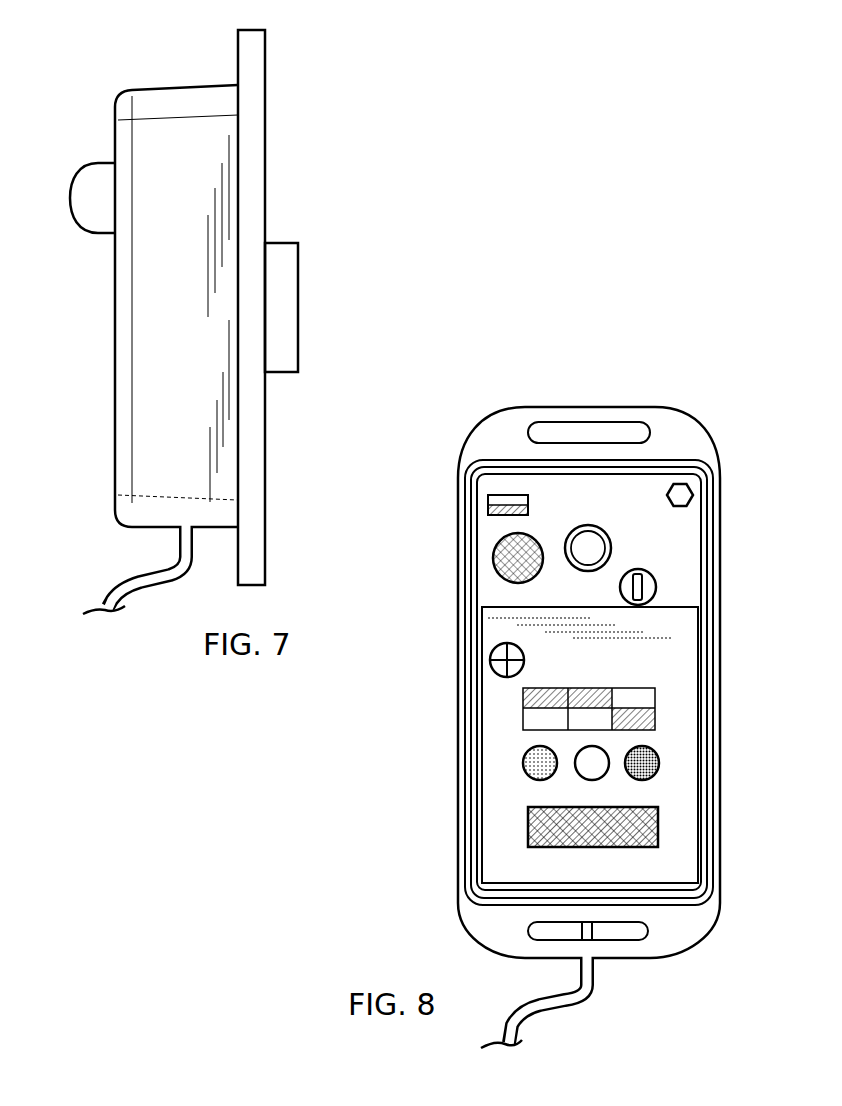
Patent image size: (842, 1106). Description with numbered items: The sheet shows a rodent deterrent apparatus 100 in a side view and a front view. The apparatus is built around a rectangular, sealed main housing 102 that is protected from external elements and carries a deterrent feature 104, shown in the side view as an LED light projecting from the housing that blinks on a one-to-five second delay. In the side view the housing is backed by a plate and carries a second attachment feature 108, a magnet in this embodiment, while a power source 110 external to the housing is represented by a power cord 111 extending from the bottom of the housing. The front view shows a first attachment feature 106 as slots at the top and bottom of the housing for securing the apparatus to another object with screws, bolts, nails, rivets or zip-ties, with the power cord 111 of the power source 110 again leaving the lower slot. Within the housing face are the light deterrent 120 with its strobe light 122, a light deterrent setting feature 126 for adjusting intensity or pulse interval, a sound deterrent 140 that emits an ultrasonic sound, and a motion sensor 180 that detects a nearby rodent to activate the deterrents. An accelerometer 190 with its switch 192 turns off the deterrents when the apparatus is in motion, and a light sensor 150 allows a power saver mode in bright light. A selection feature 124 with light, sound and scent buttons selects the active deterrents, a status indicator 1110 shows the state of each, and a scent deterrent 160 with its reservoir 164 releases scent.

In FIG. 7, the rodent deterrent apparatus 100 is at (268, 127).
In FIG. 8, the rodent deterrent apparatus 100 is at (700, 425).
In FIG. 7, the main housing 102 is at (113, 317).
In FIG. 8, the main housing 102 is at (460, 745).
In FIG. 7, the deterrent feature 104 is at (80, 193).
In FIG. 8, the deterrent feature 104 is at (498, 567).
In FIG. 8, the first attachment feature 106 is at (590, 430).
In FIG. 7, the second attachment feature 108 is at (295, 310).
In FIG. 7, the power source 110 is at (100, 597).
In FIG. 8, the power source 110 is at (565, 1000).
In FIG. 7, the power cord 111 is at (140, 562).
In FIG. 8, the power cord 111 is at (532, 1018).
In FIG. 8, the light deterrent 120 is at (613, 558).
In FIG. 8, the strobe light 122 is at (608, 542).
In FIG. 8, the selection feature 124 is at (640, 700).
In FIG. 8, the light deterrent setting feature 126 is at (655, 590).
In FIG. 8, the sound deterrent 140 is at (497, 545).
In FIG. 8, the light sensor 150 is at (490, 658).
In FIG. 8, the scent deterrent 160 is at (658, 815).
In FIG. 8, the reservoir 164 is at (657, 833).
In FIG. 8, the motion sensor 180 is at (682, 493).
In FIG. 8, the accelerometer 190 is at (496, 490).
In FIG. 8, the switch 192 is at (488, 505).
In FIG. 8, the status indicator 1110 is at (655, 767).